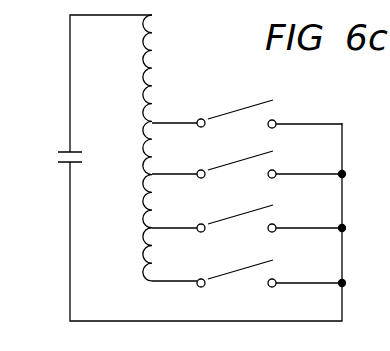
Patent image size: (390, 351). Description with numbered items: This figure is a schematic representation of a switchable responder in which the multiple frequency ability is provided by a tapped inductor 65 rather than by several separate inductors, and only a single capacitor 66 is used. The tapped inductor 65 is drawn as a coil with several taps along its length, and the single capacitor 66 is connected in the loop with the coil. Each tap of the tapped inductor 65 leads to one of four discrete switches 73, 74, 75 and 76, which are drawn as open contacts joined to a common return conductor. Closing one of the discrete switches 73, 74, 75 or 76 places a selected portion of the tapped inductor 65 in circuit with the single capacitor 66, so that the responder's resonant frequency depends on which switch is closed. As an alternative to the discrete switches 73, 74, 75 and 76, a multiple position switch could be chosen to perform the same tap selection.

The tapped inductor 65 is at (148, 70).
The single capacitor 66 is at (56, 155).
The discrete switch 73 is at (230, 120).
The discrete switch 74 is at (230, 172).
The discrete switch 75 is at (230, 226).
The discrete switch 76 is at (230, 281).